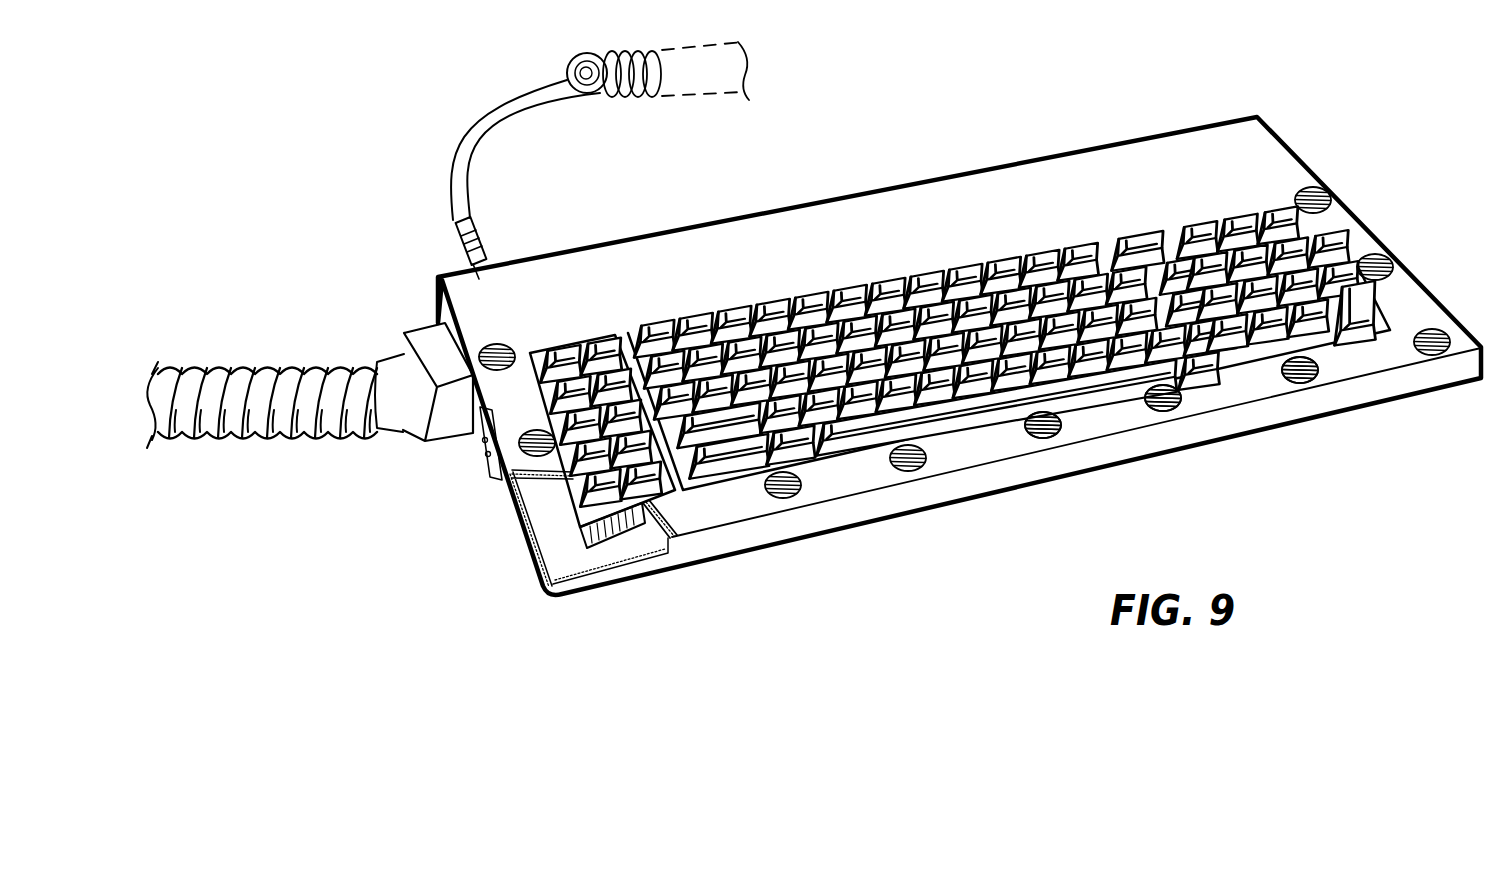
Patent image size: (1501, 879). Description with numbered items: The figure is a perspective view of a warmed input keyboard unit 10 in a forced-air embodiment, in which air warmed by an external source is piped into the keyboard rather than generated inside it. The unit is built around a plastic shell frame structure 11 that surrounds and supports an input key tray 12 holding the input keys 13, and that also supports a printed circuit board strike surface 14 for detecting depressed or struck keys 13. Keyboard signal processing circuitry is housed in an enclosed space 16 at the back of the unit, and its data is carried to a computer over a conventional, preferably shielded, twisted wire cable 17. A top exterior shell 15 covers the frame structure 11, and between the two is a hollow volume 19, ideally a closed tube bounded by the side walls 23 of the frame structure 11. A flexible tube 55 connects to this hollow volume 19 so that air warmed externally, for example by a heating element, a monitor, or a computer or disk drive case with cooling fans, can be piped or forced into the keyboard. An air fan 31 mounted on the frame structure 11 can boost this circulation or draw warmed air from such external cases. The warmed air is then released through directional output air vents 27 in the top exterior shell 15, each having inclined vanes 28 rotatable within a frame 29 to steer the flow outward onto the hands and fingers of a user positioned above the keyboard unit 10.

The warmed input keyboard unit 10 is at (413, 226).
The plastic shell frame structure 11 is at (1296, 427).
The input key tray 12 is at (582, 527).
The input keys 13 is at (985, 249).
The printed circuit board strike surface 14 is at (590, 518).
The top exterior shell 15 is at (717, 510).
The enclosed space 16 is at (553, 247).
The twisted wire cable 17 is at (472, 148).
The hollow volume 19 is at (657, 545).
The side walls 23 is at (889, 497).
The directional output air vents 27 is at (1383, 252).
The inclined vanes 28 is at (1060, 419).
The frame 29 is at (1283, 371).
The air fan 31 is at (400, 341).
The flexible tube 55 is at (234, 436).